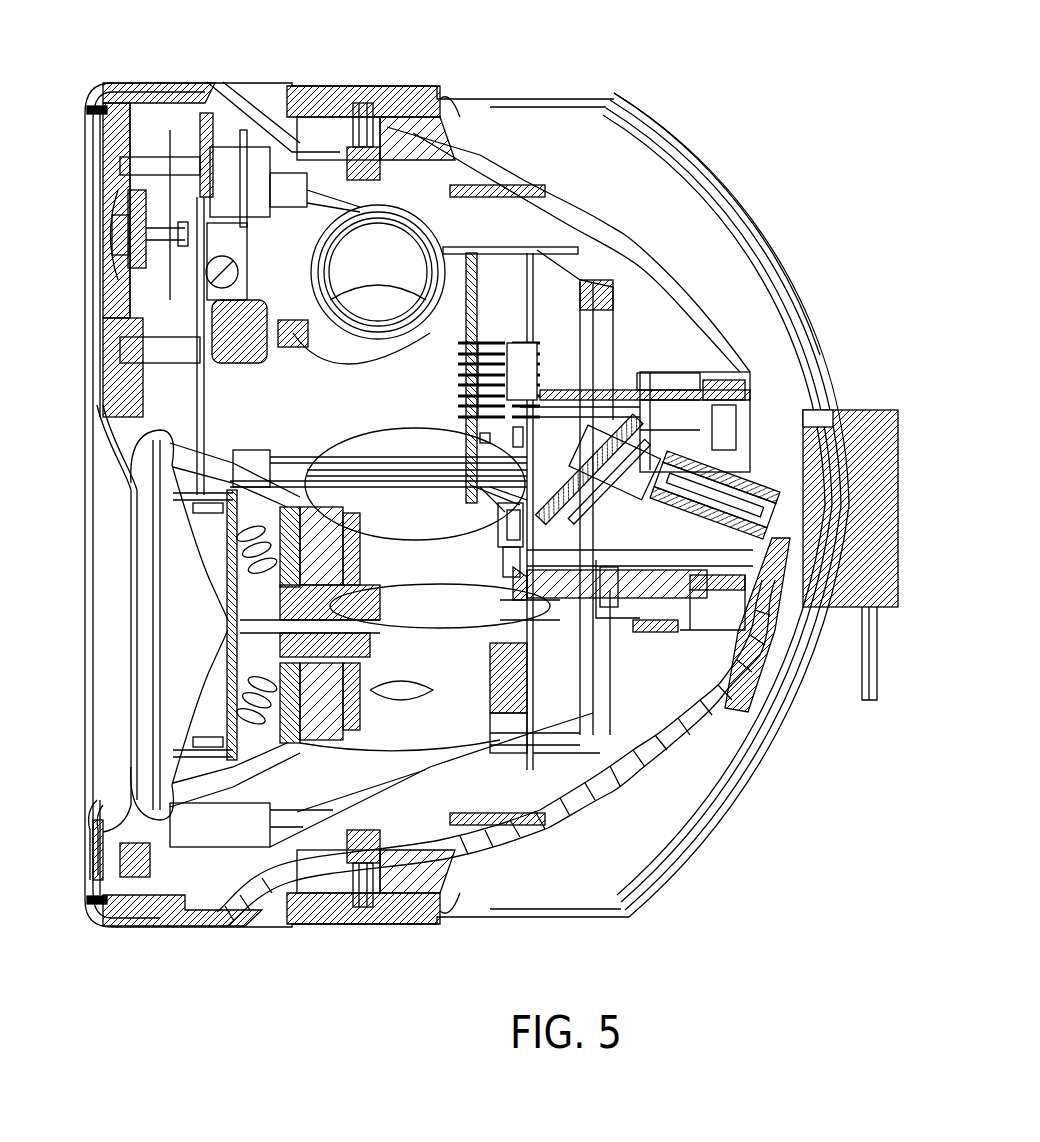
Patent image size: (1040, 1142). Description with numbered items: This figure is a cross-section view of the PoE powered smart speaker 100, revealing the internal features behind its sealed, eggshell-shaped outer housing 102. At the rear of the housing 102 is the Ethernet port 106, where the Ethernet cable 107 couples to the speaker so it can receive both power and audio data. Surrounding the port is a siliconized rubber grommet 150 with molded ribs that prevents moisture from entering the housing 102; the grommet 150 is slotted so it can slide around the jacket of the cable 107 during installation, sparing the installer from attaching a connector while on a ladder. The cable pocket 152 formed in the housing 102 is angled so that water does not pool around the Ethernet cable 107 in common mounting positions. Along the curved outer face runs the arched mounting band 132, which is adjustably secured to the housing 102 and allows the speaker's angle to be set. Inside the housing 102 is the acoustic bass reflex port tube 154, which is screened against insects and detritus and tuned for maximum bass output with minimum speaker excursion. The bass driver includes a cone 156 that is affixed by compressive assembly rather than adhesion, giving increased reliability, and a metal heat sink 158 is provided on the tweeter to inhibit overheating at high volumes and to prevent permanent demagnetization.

The smart speaker 100 is at (82, 88).
The outer housing 102 is at (677, 733).
The Ethernet port 106 is at (740, 471).
The Ethernet cable 107 is at (763, 653).
The mounting band 132 is at (640, 143).
The grommet 150 is at (757, 513).
The cable pocket 152 is at (606, 565).
The acoustic bass reflex port tube 154 is at (433, 283).
The cone 156 is at (95, 840).
The heat sink 158 is at (130, 205).